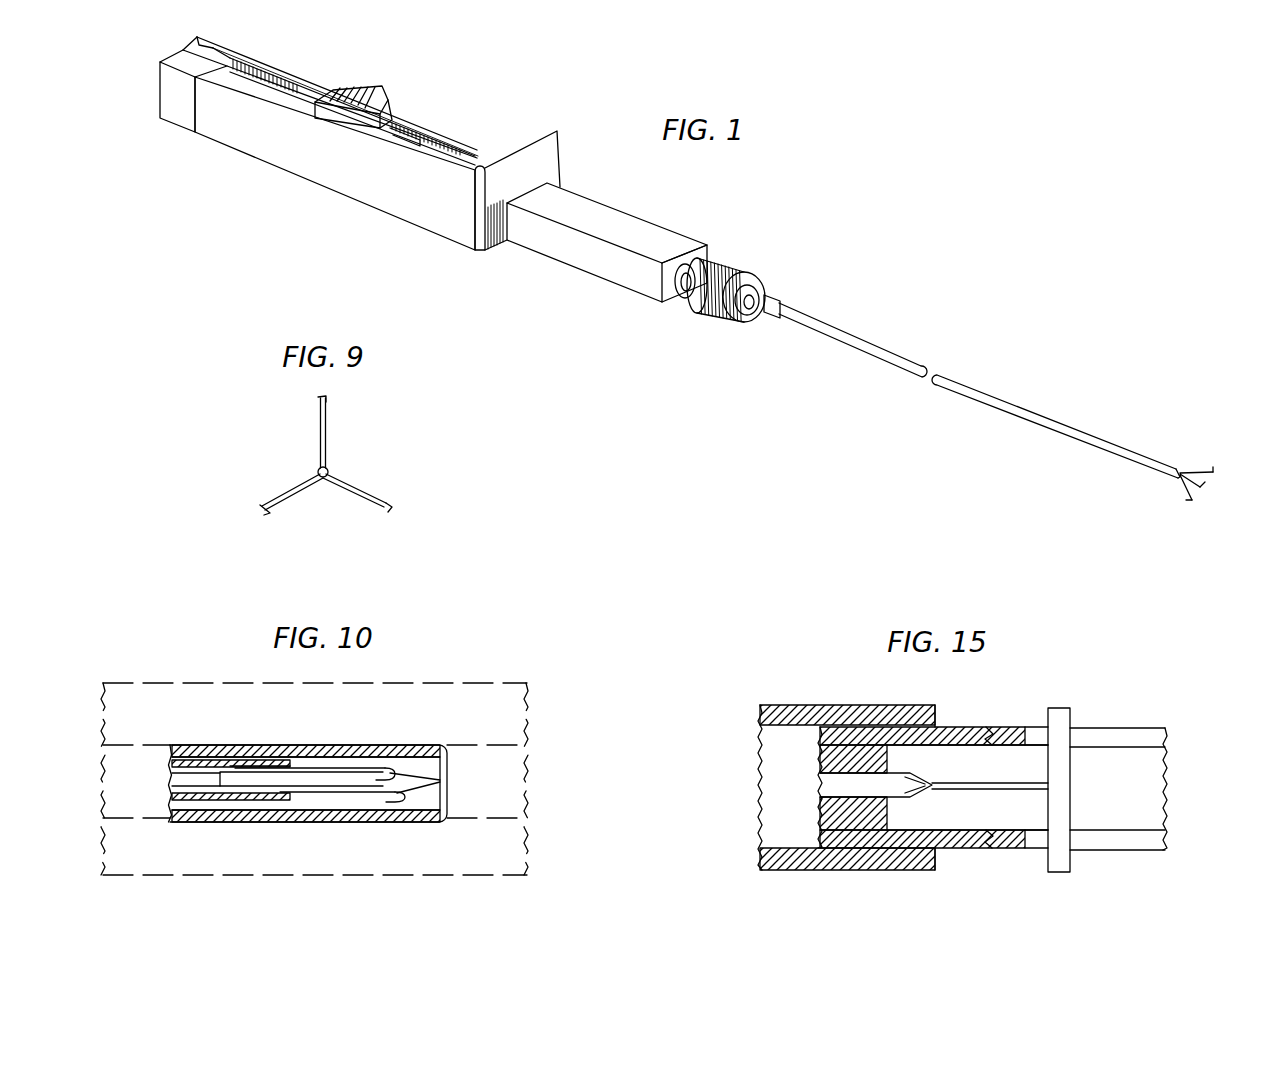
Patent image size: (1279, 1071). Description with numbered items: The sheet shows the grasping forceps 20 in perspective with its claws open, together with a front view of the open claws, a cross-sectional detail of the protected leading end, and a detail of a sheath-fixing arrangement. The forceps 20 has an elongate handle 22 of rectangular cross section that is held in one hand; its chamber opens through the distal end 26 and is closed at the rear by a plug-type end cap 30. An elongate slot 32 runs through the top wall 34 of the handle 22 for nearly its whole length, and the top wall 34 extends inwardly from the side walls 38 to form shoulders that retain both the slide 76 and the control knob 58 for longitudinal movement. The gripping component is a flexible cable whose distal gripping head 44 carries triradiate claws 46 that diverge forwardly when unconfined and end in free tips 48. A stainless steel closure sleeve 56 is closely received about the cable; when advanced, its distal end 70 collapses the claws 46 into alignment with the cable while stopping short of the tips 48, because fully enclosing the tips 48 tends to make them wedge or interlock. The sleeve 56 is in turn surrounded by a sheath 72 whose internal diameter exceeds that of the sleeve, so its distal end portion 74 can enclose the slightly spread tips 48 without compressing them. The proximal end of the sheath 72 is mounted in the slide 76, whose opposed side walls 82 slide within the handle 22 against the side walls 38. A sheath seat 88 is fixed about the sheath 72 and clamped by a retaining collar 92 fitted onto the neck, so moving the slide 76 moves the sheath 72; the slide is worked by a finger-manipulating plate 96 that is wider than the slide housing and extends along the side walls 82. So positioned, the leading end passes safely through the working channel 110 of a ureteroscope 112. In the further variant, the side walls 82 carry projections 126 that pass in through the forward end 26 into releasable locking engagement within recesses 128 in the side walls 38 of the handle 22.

In FIG. 1, the forceps 20 is at (684, 221).
In FIG. 1, the handle 22 is at (248, 162).
In FIG. 15, the handle 22 is at (762, 828).
In FIG. 15, the distal end of the handle 26 is at (937, 708).
In FIG. 1, the end cap 30 is at (156, 135).
In FIG. 1, the slot 32 is at (418, 143).
In FIG. 1, the top wall 34 is at (470, 137).
In FIG. 1, the side walls 38 is at (345, 183).
In FIG. 15, the side walls 38 is at (787, 862).
In FIG. 1, the gripping head 44 is at (1193, 463).
In FIG. 10, the gripping head 44 is at (318, 763).
In FIG. 15, the gripping head 44 is at (990, 786).
In FIG. 1, the claws 46 is at (1203, 472).
In FIG. 9, the claws 46 is at (326, 435).
In FIG. 10, the claws 46 is at (368, 795).
In FIG. 1, the tips 48 is at (1217, 477).
In FIG. 9, the tips 48 is at (318, 398).
In FIG. 10, the tips 48 is at (410, 796).
In FIG. 10, the closure sleeve 56 is at (190, 803).
In FIG. 1, the control knob 58 is at (373, 90).
In FIG. 10, the distal end of the closure sleeve 70 is at (300, 802).
In FIG. 15, the distal end of the closure sleeve 70 is at (876, 785).
In FIG. 1, the sheath 72 is at (963, 377).
In FIG. 10, the sheath 72 is at (193, 743).
In FIG. 10, the distal end portion of the sheath 74 is at (403, 745).
In FIG. 1, the slide 76 is at (613, 288).
In FIG. 15, the slide 76 is at (1146, 725).
In FIG. 1, the side walls of the slide 82 is at (622, 207).
In FIG. 15, the side walls of the slide 82 is at (963, 738).
In FIG. 1, the sheath seat 88 is at (771, 292).
In FIG. 1, the retaining collar 92 is at (731, 265).
In FIG. 1, the finger-manipulating plate 96 is at (563, 166).
In FIG. 15, the finger-manipulating plate 96 is at (1065, 720).
In FIG. 10, the working channel 110 is at (495, 754).
In FIG. 10, the ureteroscope 112 is at (440, 678).
In FIG. 15, the projections 126 is at (996, 720).
In FIG. 15, the recesses 128 is at (898, 721).